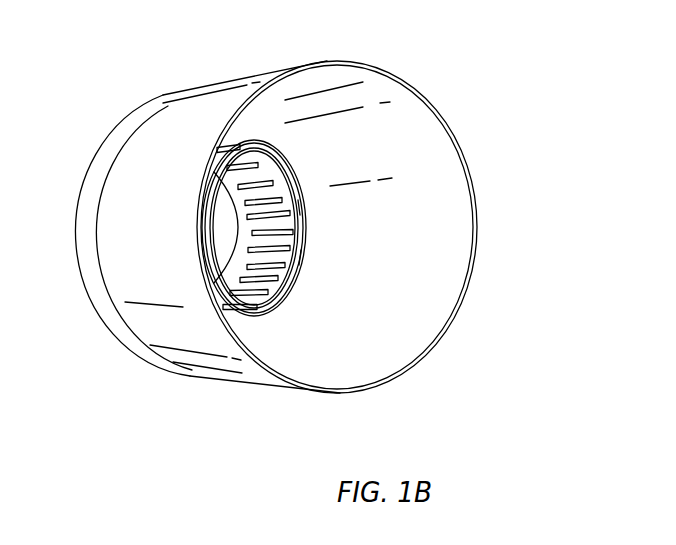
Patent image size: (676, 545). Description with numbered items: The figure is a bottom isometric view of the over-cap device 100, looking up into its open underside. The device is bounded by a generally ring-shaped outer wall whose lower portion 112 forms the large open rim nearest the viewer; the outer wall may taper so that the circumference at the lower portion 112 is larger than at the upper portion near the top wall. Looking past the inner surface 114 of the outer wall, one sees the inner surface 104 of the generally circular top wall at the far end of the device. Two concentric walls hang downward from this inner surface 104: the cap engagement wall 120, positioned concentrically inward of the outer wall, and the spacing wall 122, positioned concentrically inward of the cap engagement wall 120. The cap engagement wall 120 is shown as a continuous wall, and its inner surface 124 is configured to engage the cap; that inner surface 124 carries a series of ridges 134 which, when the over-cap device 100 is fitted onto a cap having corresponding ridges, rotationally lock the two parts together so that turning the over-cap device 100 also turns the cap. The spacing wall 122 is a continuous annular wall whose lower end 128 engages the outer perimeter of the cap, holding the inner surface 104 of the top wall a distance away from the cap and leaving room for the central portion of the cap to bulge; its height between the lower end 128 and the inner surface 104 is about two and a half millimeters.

The over-cap device 100 is at (472, 90).
The inner surface 104 is at (217, 173).
The lower portion 112 is at (396, 72).
The inner surface 114 is at (453, 263).
The cap engagement wall 120 is at (248, 305).
The spacing wall 122 is at (233, 296).
The inner surface 124 is at (242, 290).
The lower end 128 is at (242, 213).
The ridges 134 is at (257, 180).